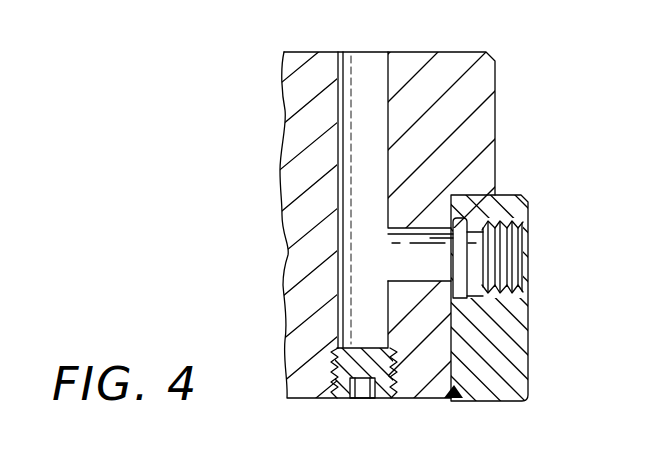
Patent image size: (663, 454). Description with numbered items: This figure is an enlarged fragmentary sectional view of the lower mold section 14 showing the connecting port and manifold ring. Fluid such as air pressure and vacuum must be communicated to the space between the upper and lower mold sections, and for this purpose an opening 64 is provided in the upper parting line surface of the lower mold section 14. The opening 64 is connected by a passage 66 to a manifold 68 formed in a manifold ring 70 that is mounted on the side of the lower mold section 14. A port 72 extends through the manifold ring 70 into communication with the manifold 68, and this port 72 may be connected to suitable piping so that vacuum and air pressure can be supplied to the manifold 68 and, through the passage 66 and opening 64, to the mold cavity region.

The lower mold section 14 is at (300, 173).
The opening 64 is at (388, 71).
The passage 66 is at (420, 230).
The manifold 68 is at (458, 232).
The manifold ring 70 is at (516, 337).
The port 72 is at (512, 264).